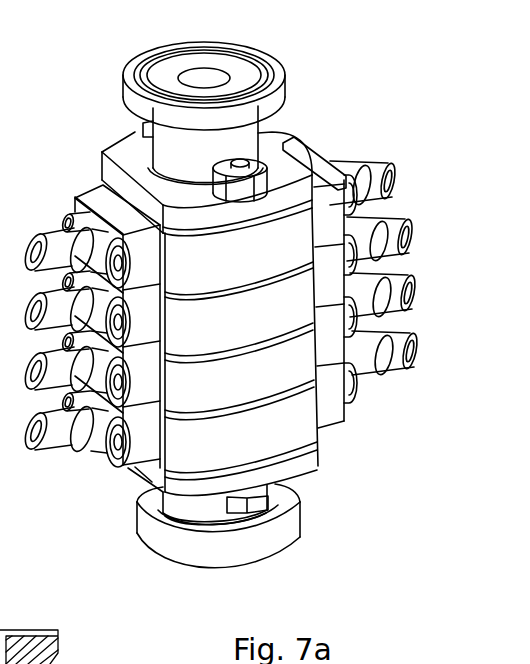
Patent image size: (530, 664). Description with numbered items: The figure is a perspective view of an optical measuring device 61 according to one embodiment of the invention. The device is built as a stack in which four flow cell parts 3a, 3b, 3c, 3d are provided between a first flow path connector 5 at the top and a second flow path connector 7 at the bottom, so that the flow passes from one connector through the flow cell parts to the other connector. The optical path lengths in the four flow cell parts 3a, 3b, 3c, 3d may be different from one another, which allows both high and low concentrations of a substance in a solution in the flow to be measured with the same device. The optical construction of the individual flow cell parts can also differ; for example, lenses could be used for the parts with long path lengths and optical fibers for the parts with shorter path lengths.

The first flow path connector 5 is at (101, 96).
The optical measuring device 61 is at (362, 113).
The second flow path connector 7 is at (315, 508).
The flow cell part 3a is at (250, 281).
The flow cell part 3b is at (260, 343).
The flow cell part 3c is at (254, 399).
The flow cell part 3d is at (268, 459).